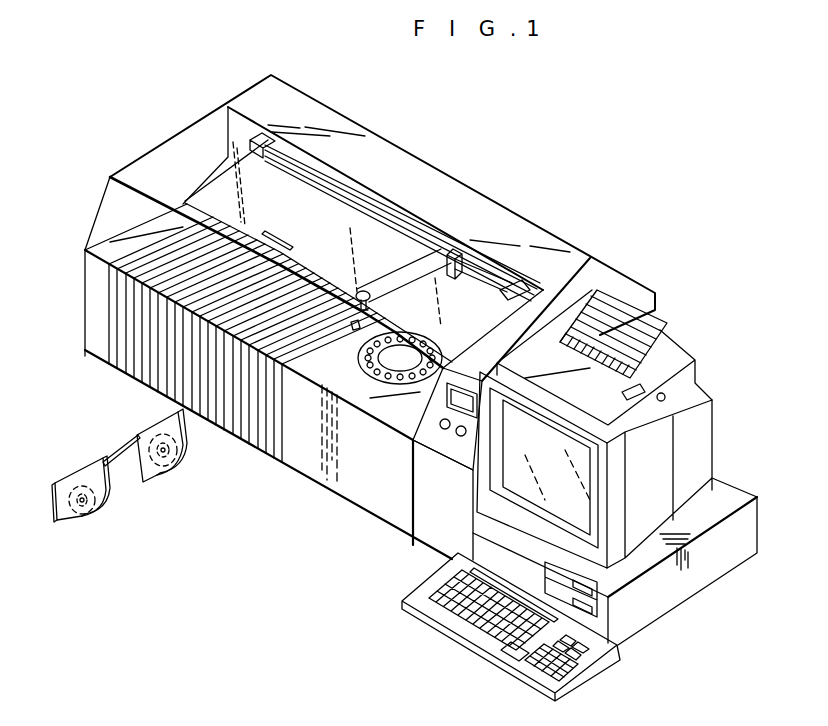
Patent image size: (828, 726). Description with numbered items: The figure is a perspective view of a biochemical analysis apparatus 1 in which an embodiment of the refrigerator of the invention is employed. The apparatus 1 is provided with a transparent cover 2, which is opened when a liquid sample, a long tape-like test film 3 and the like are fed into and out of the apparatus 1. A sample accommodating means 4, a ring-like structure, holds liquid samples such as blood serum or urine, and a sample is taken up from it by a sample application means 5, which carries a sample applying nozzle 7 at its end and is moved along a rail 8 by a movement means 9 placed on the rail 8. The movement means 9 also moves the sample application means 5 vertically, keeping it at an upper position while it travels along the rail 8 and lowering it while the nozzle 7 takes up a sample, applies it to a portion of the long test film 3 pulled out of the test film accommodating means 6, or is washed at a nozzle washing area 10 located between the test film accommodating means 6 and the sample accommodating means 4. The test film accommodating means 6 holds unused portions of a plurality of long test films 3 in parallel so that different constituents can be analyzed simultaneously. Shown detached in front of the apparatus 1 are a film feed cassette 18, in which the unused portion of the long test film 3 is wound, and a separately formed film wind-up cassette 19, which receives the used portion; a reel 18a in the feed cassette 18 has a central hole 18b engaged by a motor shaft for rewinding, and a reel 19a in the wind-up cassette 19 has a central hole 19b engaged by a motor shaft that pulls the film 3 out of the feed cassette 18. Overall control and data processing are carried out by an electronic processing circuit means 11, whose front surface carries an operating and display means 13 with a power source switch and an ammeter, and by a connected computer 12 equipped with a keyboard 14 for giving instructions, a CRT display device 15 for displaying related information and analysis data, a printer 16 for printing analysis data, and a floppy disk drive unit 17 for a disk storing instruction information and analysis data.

The biochemical analysis apparatus 1 is at (370, 325).
The transparent cover 2 is at (175, 145).
The long test film 3 is at (118, 452).
The sample accommodating means 4 is at (440, 340).
The sample application means 5 is at (395, 245).
The test film accommodating means 6 is at (306, 212).
The sample applying nozzle 7 is at (372, 306).
The rail 8 is at (528, 282).
The movement means 9 is at (462, 258).
The nozzle washing area 10 is at (355, 327).
The electronic processing circuit means 11 is at (438, 535).
The computer 12 is at (622, 470).
The operating and display means 13 is at (460, 442).
The keyboard 14 is at (412, 612).
The CRT display device 15 is at (578, 490).
The printer 16 is at (670, 355).
The floppy disk drive unit 17 is at (610, 590).
The film feed cassette 18 is at (177, 457).
The reel 18a is at (160, 480).
The hole 18b is at (183, 445).
The film wind-up cassette 19 is at (108, 503).
The reel 19a is at (75, 520).
The hole 19b is at (95, 505).